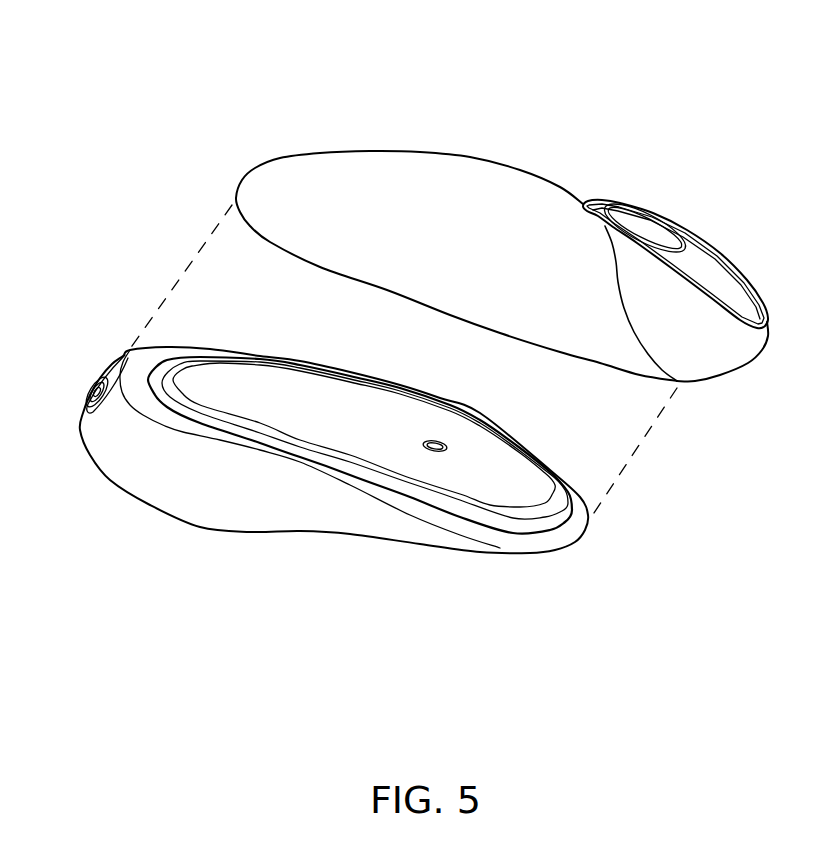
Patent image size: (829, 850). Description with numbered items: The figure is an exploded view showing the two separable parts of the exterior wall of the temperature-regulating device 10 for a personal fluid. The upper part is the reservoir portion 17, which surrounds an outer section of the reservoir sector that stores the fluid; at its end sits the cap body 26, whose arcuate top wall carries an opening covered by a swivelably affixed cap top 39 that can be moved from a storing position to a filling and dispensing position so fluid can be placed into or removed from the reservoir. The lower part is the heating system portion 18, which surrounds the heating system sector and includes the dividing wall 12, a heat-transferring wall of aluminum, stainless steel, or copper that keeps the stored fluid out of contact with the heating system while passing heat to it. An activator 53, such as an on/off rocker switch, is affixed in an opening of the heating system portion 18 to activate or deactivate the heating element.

The temperature-regulating device 10 is at (622, 80).
The dividing wall 12 is at (364, 435).
The reservoir portion 17 is at (508, 266).
The heating system portion 18 is at (318, 449).
The cap body 26 is at (686, 303).
The cap top 39 is at (710, 262).
The activator 53 is at (102, 383).